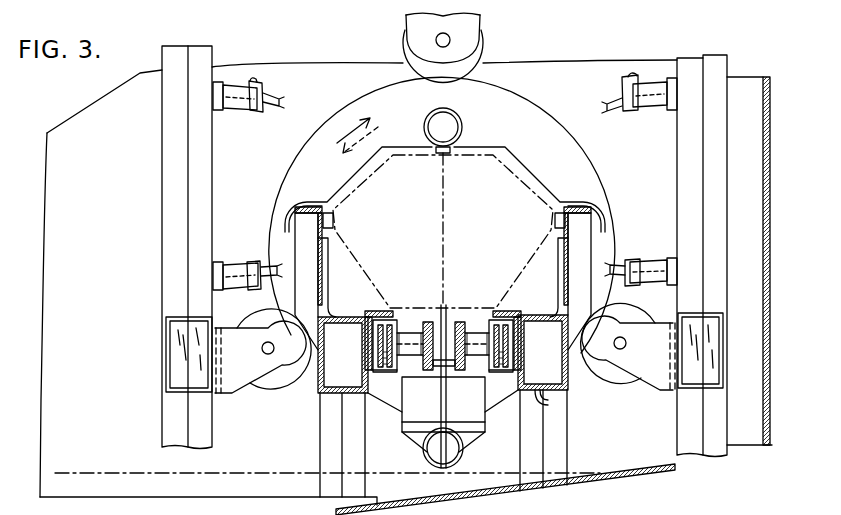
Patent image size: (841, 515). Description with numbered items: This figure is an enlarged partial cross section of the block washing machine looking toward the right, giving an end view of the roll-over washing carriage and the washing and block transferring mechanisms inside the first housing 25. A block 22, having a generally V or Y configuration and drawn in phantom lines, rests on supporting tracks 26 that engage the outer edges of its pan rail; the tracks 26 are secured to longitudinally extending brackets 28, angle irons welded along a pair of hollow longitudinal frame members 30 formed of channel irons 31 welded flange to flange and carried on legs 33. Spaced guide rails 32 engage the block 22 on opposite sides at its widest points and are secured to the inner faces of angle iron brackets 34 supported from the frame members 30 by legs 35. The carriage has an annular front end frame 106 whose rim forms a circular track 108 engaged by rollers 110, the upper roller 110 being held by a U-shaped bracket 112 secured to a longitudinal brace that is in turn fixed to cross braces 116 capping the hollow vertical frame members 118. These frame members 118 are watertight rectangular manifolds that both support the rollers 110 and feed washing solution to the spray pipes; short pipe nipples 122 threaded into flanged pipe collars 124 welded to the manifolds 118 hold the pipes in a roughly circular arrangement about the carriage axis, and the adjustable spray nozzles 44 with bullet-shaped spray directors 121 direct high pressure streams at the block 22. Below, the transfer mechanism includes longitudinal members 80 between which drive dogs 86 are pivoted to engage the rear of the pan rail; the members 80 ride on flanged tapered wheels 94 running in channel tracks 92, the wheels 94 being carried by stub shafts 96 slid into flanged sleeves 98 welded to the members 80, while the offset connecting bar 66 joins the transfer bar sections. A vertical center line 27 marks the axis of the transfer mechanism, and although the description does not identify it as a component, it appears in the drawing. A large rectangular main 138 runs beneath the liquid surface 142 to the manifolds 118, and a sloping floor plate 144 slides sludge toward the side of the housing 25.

The blocks 22 is at (457, 230).
The first housing 25 is at (770, 427).
The supporting tracks 26 is at (388, 318).
The axis 27 is at (443, 300).
The longitudinally extending brackets 28 is at (368, 313).
The longitudinal frame members 30 is at (553, 375).
The channel irons 31 is at (557, 392).
The guide rails 32 is at (334, 222).
The legs 33 is at (322, 432).
The angle iron brackets 34 is at (318, 210).
The legs 35 is at (303, 245).
The spray nozzles 44 is at (254, 126).
The offset connecting bar 66 is at (463, 452).
The longitudinal members 80 is at (422, 333).
The drive dogs 86 is at (456, 322).
The tracks 92 is at (372, 371).
The flanged tapered wheels 94 is at (470, 366).
The stub shafts 96 is at (406, 332).
The flanged sleeves 98 is at (408, 372).
The front end frame 106 is at (523, 103).
The circular track 108 is at (547, 118).
The rollers 110 is at (485, 44).
The U-shaped bracket 112 is at (478, 23).
The cross braces 116 is at (628, 514).
The vertical frame members 118 is at (167, 153).
The spray directors 121 is at (278, 103).
The pipe nipples 122 is at (240, 86).
The flanged pipe collars 124 is at (218, 112).
The rectangular main 138 is at (68, 504).
The liquid surface 142 is at (241, 473).
The sloping floor plate 144 is at (626, 474).